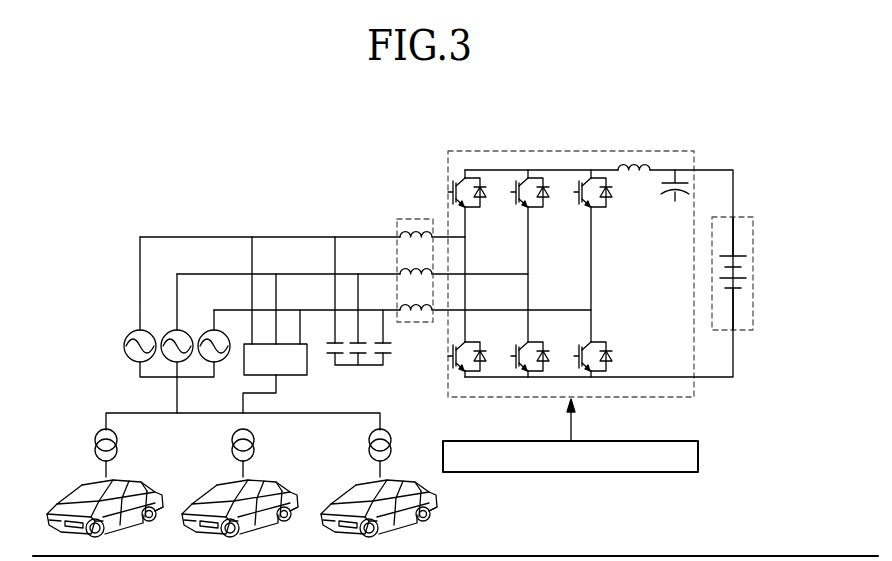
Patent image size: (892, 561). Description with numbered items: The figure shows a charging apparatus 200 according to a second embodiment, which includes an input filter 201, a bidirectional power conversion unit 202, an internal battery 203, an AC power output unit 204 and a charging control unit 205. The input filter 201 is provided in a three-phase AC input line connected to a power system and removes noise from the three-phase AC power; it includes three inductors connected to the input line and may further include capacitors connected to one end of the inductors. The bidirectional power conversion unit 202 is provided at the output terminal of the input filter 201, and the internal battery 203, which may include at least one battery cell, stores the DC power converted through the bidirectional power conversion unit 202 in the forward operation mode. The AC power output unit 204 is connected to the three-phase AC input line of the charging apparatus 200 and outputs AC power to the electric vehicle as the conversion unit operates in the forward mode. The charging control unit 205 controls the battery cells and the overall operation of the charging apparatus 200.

The charging apparatus 200 is at (178, 112).
The input filter 201 is at (412, 219).
The bidirectional power conversion unit 202 is at (565, 151).
The internal battery 203 is at (753, 267).
The AC power output unit 204 is at (297, 375).
The charging control unit 205 is at (571, 472).